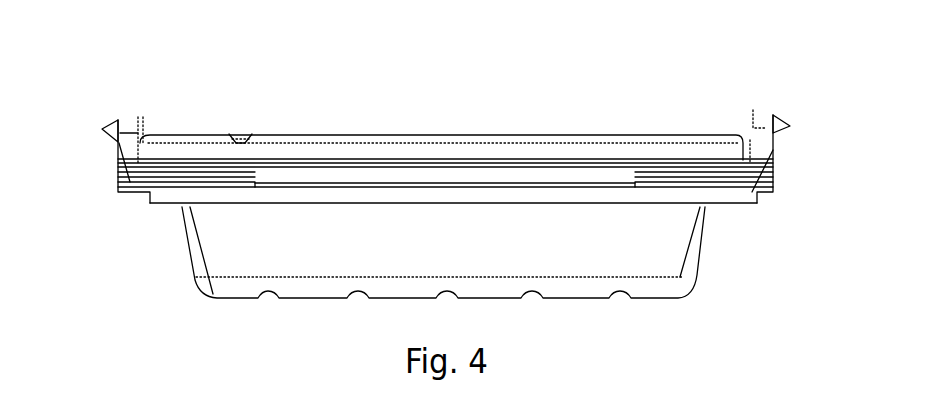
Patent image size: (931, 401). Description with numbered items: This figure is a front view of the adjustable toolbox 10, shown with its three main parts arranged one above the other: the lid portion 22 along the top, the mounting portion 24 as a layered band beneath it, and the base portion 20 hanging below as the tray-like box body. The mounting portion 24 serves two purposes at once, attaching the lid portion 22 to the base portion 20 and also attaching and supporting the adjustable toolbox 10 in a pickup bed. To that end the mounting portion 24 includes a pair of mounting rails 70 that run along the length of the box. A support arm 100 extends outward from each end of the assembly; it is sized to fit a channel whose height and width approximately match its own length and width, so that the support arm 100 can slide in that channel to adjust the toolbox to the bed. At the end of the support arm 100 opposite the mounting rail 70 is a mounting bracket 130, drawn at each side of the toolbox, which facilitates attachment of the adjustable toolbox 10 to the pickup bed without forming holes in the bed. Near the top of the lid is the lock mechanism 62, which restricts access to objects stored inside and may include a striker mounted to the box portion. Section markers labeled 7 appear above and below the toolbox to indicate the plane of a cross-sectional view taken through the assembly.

The adjustable toolbox 10 is at (606, 73).
The base portion 20 is at (564, 283).
The lid portion 22 is at (450, 141).
The mounting portion 24 is at (517, 177).
The lock mechanism 62 is at (234, 136).
The mounting rail 70 is at (358, 175).
The support arm 100 is at (133, 196).
The mounting bracket 130 is at (118, 147).
The section line 7- 7 is at (240, 118).